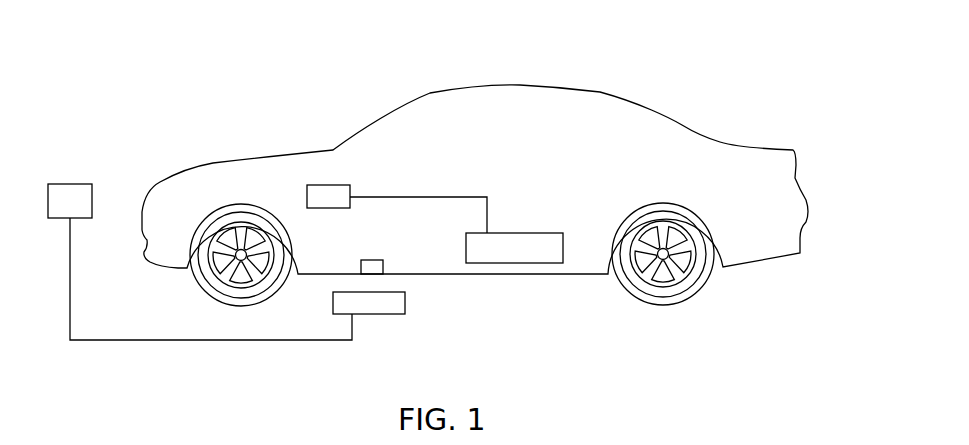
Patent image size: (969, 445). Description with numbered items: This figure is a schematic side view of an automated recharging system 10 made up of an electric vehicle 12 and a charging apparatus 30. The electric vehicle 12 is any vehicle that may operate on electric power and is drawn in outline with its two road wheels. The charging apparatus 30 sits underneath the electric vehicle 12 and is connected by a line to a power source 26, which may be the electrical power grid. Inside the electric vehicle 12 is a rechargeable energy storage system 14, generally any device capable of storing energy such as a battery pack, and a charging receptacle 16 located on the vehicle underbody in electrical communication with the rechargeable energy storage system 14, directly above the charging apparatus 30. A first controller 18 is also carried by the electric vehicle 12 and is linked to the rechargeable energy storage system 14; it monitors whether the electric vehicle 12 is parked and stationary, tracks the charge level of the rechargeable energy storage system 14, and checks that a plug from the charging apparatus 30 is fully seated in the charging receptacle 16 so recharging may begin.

The automated recharging system 10 is at (247, 93).
The electric vehicle 12 is at (682, 125).
The rechargeable energy storage system (RESS) 14 is at (525, 256).
The charging receptacle 16 is at (372, 260).
The first controller 18 is at (343, 185).
The power source 26 is at (80, 210).
The charging apparatus 30 is at (387, 314).